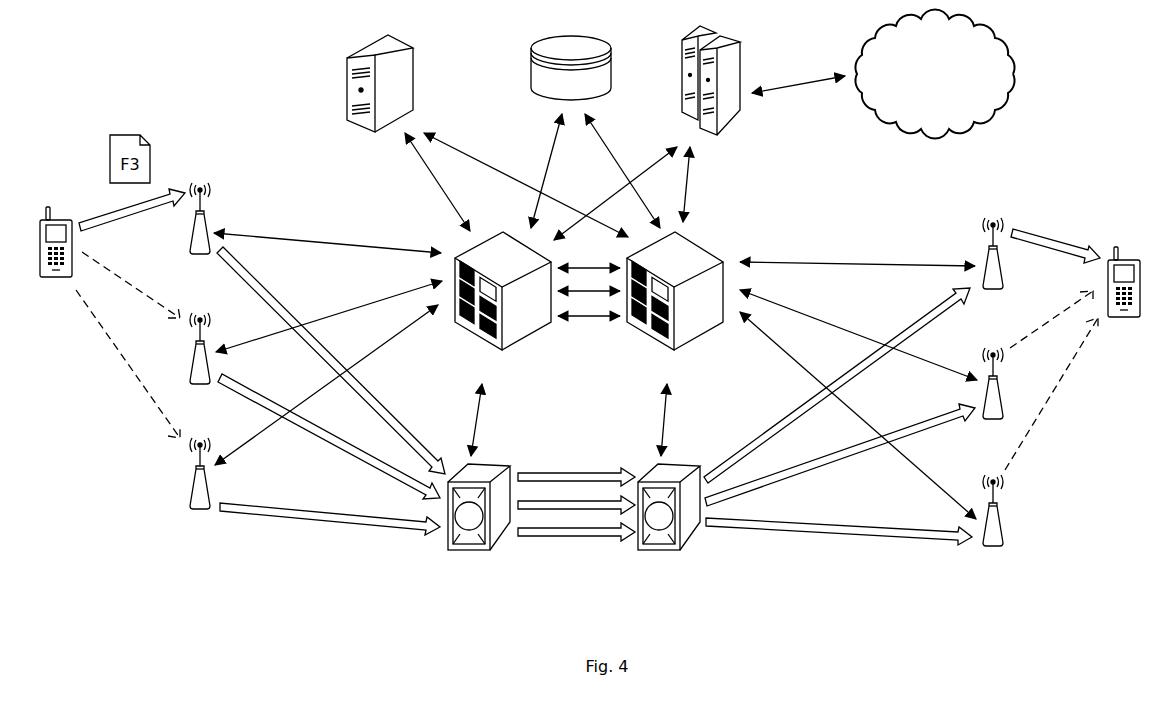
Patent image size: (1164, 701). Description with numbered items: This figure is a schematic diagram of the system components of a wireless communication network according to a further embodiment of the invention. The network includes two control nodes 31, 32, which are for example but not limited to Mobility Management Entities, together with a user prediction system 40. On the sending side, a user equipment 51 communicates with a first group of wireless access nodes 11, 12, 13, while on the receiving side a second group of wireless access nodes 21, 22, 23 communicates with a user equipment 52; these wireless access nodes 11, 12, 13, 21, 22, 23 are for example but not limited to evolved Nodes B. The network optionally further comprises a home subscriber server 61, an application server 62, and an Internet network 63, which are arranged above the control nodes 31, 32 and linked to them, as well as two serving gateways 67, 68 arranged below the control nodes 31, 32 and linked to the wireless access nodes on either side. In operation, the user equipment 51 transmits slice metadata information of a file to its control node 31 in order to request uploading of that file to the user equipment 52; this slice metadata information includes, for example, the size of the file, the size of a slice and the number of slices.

The wireless access node 11 is at (200, 232).
The wireless access node 12 is at (200, 362).
The wireless access node 13 is at (200, 488).
The wireless access node 21 is at (993, 267).
The wireless access node 22 is at (993, 397).
The wireless access node 23 is at (993, 525).
The control node 31 is at (503, 305).
The control node 32 is at (675, 305).
The user prediction system 40 is at (380, 99).
The user equipment 51 is at (56, 255).
The user equipment 52 is at (1124, 296).
The home subscriber server 61 is at (571, 68).
The application server 62 is at (711, 95).
The Internet network 63 is at (934, 73).
The serving gateway 67 is at (479, 522).
The serving gateway 68 is at (669, 522).